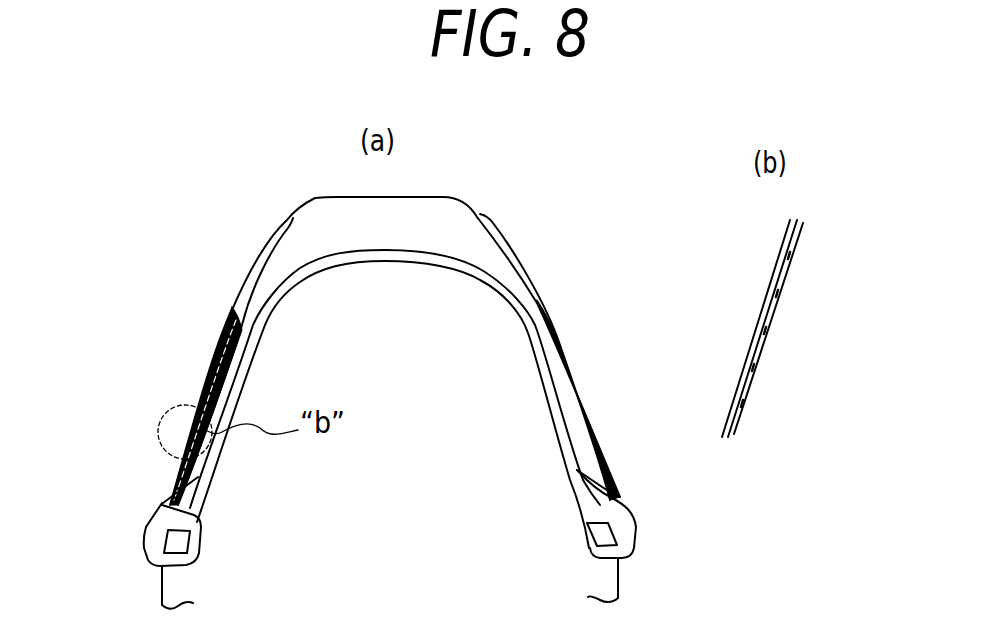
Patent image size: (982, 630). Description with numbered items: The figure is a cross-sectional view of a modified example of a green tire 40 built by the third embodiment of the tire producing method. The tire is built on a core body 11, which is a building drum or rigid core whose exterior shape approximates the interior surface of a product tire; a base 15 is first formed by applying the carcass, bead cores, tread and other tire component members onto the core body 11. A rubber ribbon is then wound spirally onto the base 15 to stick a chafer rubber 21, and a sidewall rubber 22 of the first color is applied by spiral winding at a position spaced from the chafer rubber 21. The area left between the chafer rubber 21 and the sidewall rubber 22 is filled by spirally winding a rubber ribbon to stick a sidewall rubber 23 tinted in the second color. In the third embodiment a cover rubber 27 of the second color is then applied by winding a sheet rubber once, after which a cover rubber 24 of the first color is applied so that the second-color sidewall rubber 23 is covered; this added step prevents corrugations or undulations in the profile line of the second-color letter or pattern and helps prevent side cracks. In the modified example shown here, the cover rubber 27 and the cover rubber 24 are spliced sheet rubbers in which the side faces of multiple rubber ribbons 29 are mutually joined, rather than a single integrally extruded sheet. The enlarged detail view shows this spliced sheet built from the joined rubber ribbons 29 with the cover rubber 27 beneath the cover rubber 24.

The green tire 40 is at (268, 193).
The core body 11 is at (250, 467).
The base 15 is at (228, 362).
The sidewall rubber 22 is at (257, 270).
The cover rubber 24 is at (230, 328).
The cover rubber 27 is at (198, 391).
The sidewall rubber 23 is at (203, 418).
The rubber ribbons 29 is at (204, 440).
The chafer rubber 21 is at (148, 540).